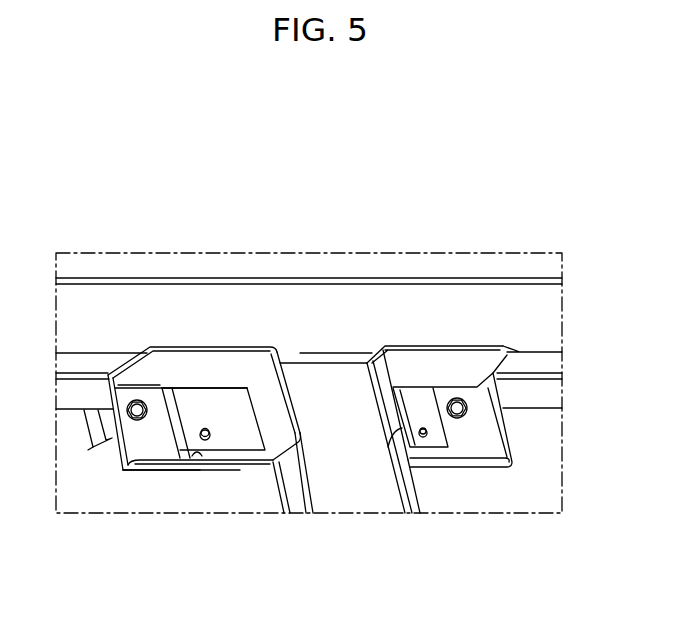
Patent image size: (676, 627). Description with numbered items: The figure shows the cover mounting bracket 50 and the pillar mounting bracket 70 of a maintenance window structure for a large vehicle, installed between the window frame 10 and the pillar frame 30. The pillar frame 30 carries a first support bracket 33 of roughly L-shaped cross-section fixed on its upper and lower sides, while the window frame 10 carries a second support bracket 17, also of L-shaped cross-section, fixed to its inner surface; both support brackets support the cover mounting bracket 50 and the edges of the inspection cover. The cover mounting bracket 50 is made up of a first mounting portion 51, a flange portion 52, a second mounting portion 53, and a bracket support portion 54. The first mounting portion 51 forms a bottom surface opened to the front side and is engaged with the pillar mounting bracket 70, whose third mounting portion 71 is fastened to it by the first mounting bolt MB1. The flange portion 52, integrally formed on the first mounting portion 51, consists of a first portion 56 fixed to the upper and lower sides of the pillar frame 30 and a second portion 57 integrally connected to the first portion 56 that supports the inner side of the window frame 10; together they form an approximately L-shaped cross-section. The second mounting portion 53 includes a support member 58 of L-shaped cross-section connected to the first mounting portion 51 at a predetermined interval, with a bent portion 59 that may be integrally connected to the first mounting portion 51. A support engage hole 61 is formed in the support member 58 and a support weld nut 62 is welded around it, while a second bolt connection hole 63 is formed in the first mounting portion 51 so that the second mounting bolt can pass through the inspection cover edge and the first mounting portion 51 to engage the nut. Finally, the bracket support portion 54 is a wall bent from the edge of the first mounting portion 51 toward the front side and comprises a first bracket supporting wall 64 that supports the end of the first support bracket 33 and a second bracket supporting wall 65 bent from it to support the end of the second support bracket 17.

The window frame 10 is at (423, 275).
The second support bracket 17 is at (65, 392).
The pillar frame 30 is at (327, 352).
The first support bracket 33 is at (263, 498).
The cover mounting bracket 50 is at (283, 383).
The first mounting portion 51 is at (150, 386).
The flange portion 52 is at (204, 300).
The second mounting portion 53 is at (212, 383).
The bracket support portion 54 is at (164, 524).
The first portion 56 is at (277, 383).
The second portion 57 is at (230, 363).
The support member 58 is at (276, 432).
The bent portion 59 is at (163, 398).
The support engage hole 61 is at (208, 386).
The support weld nut 62 is at (206, 441).
The second bolt connection hole 63 is at (200, 470).
The first bracket supporting wall 64 is at (147, 468).
The second bracket supporting wall 65 is at (123, 462).
The pillar mounting bracket 70 is at (76, 450).
The third mounting portion 71 is at (88, 428).
The first mounting bolt MB1 is at (129, 401).